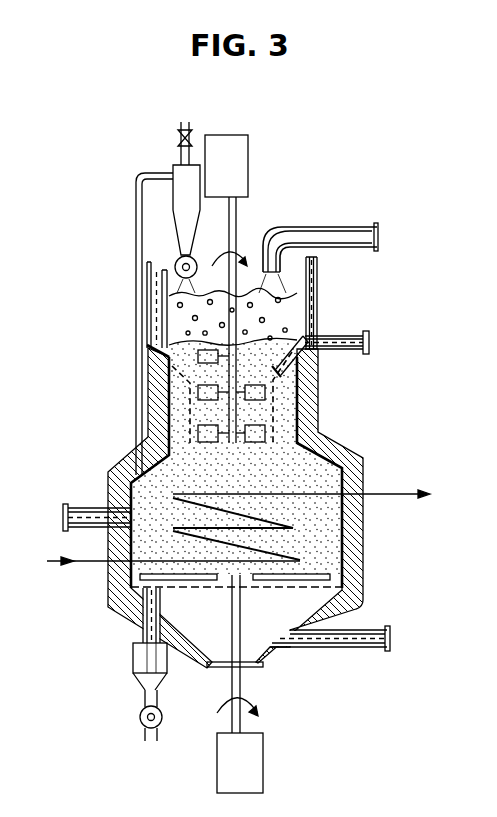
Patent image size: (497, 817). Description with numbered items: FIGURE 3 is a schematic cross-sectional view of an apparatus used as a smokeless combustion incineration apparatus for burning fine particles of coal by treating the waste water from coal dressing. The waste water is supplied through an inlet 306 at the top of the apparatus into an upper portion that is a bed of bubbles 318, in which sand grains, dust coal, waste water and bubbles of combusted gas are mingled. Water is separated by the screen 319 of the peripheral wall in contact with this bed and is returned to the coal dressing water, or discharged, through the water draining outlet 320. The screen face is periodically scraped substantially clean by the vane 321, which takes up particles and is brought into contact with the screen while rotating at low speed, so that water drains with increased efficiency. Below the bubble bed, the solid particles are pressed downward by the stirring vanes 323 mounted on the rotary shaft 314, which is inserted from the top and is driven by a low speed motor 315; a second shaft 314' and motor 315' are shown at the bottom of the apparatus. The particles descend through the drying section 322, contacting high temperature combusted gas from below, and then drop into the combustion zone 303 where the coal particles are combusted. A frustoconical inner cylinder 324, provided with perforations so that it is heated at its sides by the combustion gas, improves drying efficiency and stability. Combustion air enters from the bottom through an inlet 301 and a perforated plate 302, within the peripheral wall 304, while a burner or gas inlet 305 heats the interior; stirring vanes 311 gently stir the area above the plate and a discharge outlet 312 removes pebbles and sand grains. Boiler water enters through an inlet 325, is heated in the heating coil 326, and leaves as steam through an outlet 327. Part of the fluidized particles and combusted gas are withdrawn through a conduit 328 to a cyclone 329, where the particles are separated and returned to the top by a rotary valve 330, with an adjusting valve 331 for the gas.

The inlet 301 is at (372, 650).
The perforated plate 302 is at (266, 590).
The combustion zone 303 is at (335, 556).
The peripheral wall 304 is at (355, 532).
The ignition burner or fluid inlet 305 is at (78, 506).
The inlet 306 is at (365, 227).
The stirring vanes 311 is at (108, 582).
The discharge outlet 312 is at (142, 658).
The rotary shaft 314 is at (212, 654).
The low speed motor 315 is at (273, 763).
The upper stirrer shaft 314' is at (257, 320).
The upper motor 315' is at (263, 166).
The bed of bubbles 318 is at (293, 314).
The screen 319 is at (317, 266).
The water draining outlet 320 is at (356, 349).
The vane 321 is at (166, 270).
The drying section 322 is at (180, 375).
The stirring vanes 323 is at (198, 356).
The frustoconical inner cylinder 324 is at (198, 432).
The boiler water inlet 325 is at (52, 561).
The heating coil 326 is at (270, 520).
The steam outlet 327 is at (388, 494).
The conduit 328 is at (136, 192).
The cyclone 329 is at (186, 205).
The rotary valve 330 is at (178, 255).
The adjusting valve 331 is at (178, 137).